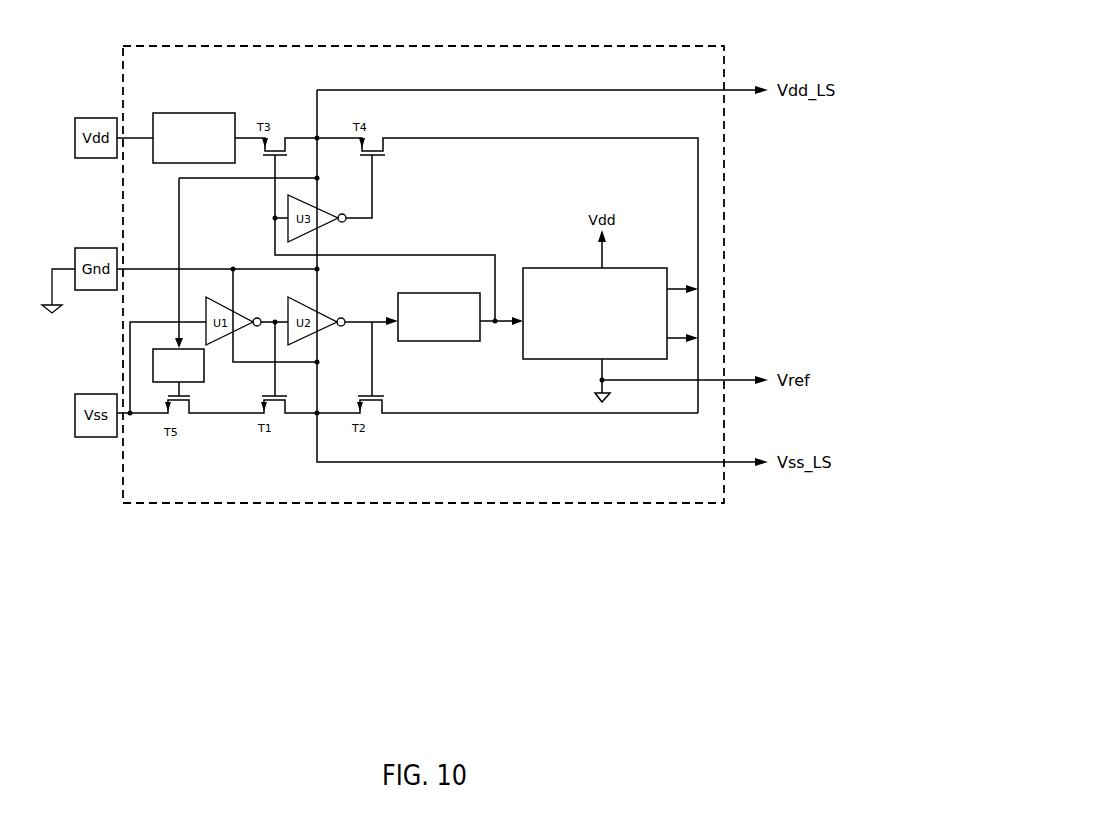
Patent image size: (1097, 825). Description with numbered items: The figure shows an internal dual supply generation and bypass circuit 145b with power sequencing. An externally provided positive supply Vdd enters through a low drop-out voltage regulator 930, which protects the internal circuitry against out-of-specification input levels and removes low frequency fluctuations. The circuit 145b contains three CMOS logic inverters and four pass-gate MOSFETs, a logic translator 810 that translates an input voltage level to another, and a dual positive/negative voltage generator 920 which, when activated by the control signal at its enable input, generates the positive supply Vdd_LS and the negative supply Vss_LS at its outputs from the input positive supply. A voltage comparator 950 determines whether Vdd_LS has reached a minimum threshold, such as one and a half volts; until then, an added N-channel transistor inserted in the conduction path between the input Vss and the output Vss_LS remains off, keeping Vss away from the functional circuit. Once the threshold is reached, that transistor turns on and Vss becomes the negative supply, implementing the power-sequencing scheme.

The circuit 145b is at (460, 43).
The low drop-out (LDO) voltage regulator 930 is at (195, 113).
The voltage comparator 950 is at (205, 365).
The logic translator 810 is at (460, 345).
The dual positive/negative voltage generator (DVG) 920 is at (535, 363).